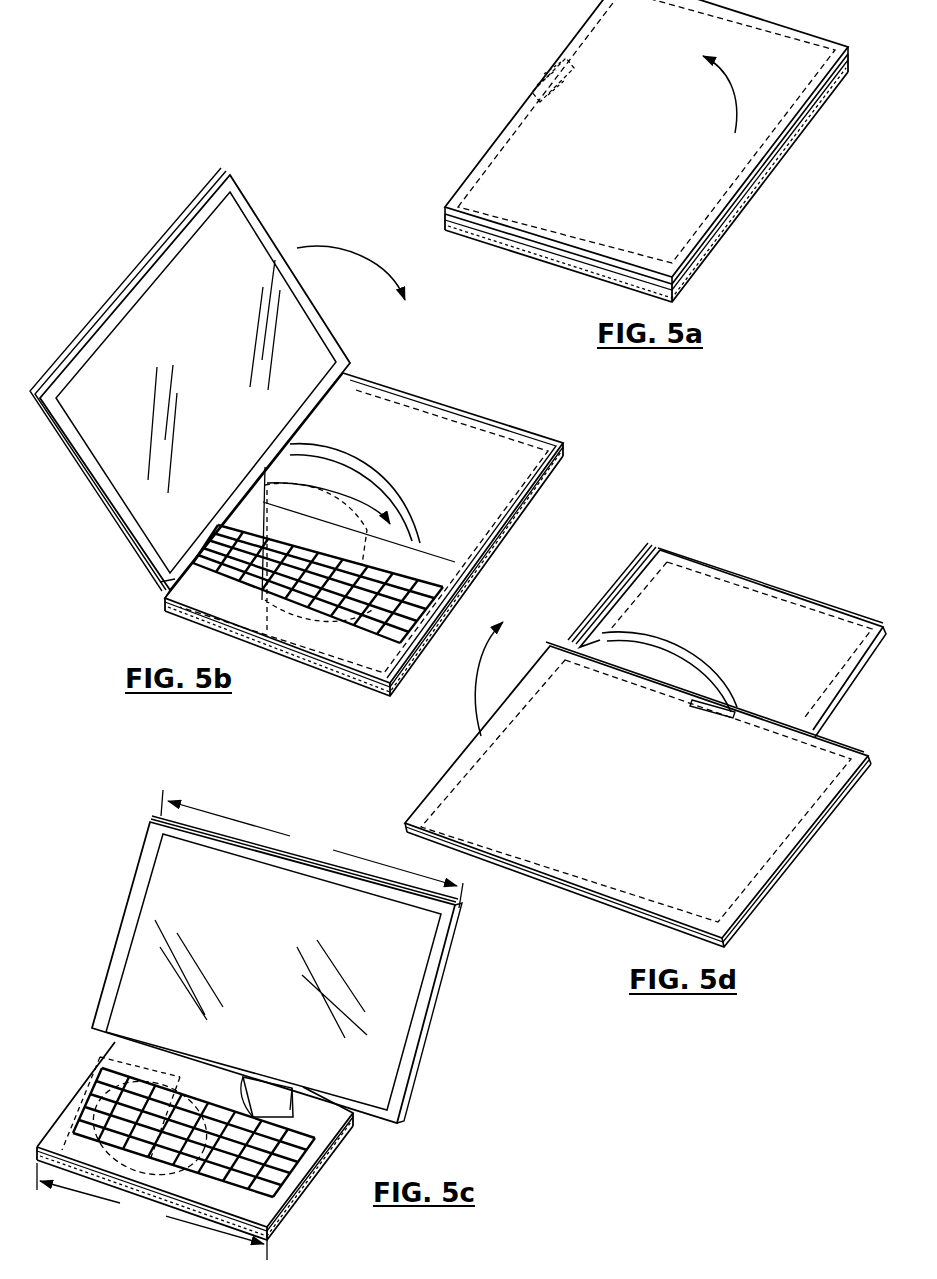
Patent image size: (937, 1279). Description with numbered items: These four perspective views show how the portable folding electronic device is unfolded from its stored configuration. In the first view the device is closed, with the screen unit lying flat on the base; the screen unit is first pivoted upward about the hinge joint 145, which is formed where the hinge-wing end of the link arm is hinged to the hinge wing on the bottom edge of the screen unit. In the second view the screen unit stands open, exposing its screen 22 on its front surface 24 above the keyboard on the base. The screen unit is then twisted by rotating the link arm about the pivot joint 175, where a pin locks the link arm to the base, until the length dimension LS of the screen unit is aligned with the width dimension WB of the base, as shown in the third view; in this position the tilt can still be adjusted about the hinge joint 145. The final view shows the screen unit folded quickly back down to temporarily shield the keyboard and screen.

In FIG. 5a, the hinge joint 145 is at (522, 71).
In FIG. 5b, the screen 22 is at (122, 478).
In FIG. 5c, the screen 22 is at (163, 883).
In FIG. 5b, the front surface 24 is at (152, 575).
In FIG. 5c, the pivot joint 175 is at (143, 1063).
In FIG. 5c, the length dimension of the screen unit LS is at (312, 849).
In FIG. 5c, the width dimension of the base WB is at (152, 1211).